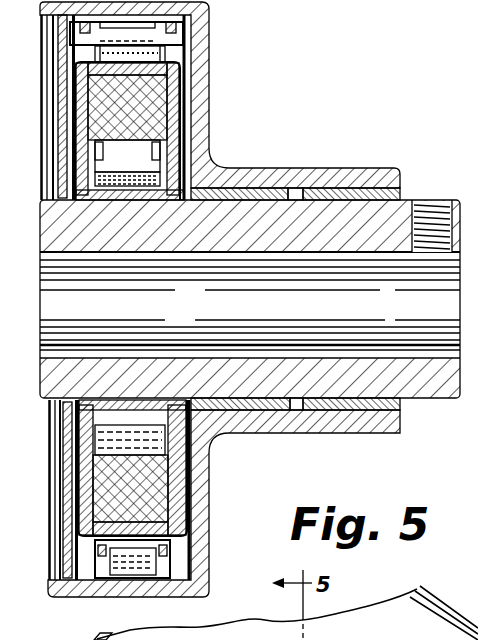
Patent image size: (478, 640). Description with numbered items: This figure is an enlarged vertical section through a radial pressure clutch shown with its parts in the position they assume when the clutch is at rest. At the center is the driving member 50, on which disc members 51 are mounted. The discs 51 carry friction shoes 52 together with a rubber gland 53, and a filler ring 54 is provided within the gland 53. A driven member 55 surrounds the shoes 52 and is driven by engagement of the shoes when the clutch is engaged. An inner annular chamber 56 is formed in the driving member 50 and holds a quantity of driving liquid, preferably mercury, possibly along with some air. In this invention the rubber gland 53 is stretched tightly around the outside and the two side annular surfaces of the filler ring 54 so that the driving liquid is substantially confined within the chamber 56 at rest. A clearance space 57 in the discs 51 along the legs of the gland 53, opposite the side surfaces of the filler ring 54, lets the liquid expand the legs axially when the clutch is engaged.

The driving member 50 is at (357, 213).
The disc members 51 is at (74, 468).
The friction shoes 52 is at (185, 40).
The rubber gland 53 is at (191, 112).
The filler ring 54 is at (158, 504).
The driven member 55 is at (293, 177).
The inner annular chamber 56 is at (143, 162).
The clearance space 57 is at (187, 98).